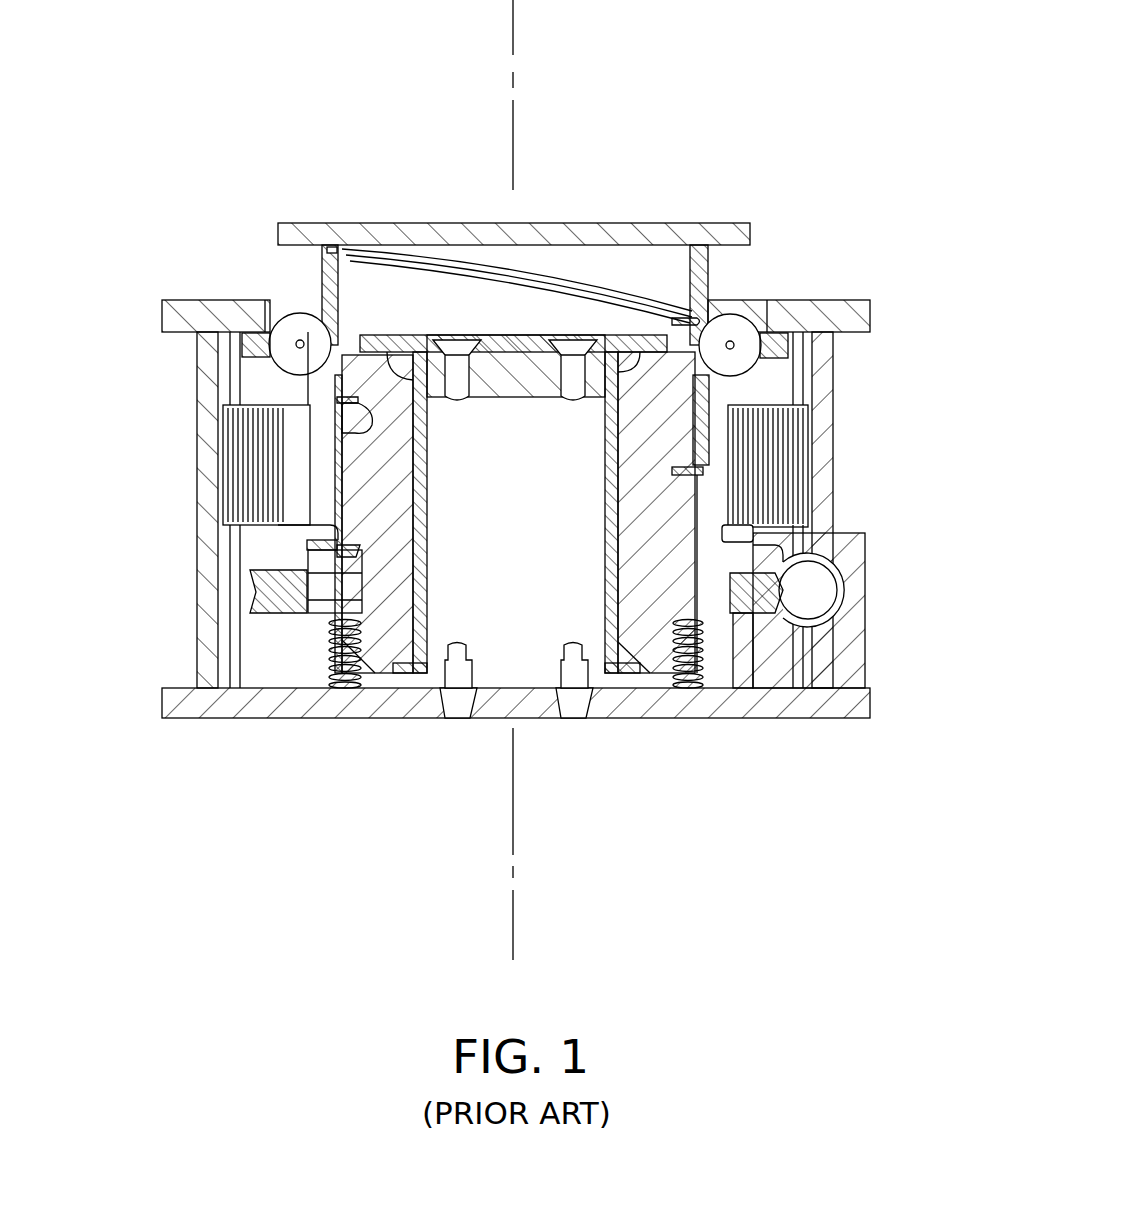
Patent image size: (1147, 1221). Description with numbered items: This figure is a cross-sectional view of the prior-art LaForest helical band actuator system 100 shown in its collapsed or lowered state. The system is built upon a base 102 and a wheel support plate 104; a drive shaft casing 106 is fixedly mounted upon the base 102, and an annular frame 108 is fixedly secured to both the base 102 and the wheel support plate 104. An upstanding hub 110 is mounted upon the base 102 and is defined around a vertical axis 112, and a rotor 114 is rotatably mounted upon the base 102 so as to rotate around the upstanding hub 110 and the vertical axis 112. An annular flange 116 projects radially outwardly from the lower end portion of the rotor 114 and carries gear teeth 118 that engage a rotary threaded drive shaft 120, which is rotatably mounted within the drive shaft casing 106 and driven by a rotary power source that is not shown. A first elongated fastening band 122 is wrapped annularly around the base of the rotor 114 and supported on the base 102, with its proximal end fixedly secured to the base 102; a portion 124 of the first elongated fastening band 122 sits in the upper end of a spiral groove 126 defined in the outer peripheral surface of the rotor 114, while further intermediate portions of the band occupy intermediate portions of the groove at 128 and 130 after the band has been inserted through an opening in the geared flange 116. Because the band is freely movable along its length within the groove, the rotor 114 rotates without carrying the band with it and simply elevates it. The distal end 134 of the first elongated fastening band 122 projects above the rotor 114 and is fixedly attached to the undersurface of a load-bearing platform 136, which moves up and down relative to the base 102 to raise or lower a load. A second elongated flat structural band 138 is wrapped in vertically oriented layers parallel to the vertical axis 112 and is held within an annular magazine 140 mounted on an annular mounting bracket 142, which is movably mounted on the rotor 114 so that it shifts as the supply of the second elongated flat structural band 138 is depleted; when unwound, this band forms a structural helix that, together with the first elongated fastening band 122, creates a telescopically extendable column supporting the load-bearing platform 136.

The helical band actuator system 100 is at (528, 480).
The base 102 is at (672, 712).
The wheel support plate 104 is at (850, 318).
The drive shaft casing 106 is at (832, 657).
The annular frame 108 is at (207, 653).
The upstanding hub 110 is at (602, 444).
The vertical axis 112 is at (513, 22).
The rotor 114 is at (398, 650).
The annular flange 116 is at (262, 589).
The gear teeth 118 is at (778, 593).
The rotary threaded drive shaft 120 is at (820, 590).
The first elongated fastening band 122 is at (527, 272).
The portion of the first elongated fastening band 124 is at (372, 428).
The spiral groove 126 is at (372, 427).
The intermediate portion of the spiral groove 128 is at (677, 477).
The intermediate portion of the spiral groove 130 is at (355, 545).
The distal end of the first elongated fastening band 134 is at (320, 278).
The load-bearing platform 136 is at (470, 228).
The second elongated flat structural band 138 is at (247, 497).
The annular magazine 140 is at (810, 420).
The annular mounting bracket 142 is at (270, 572).